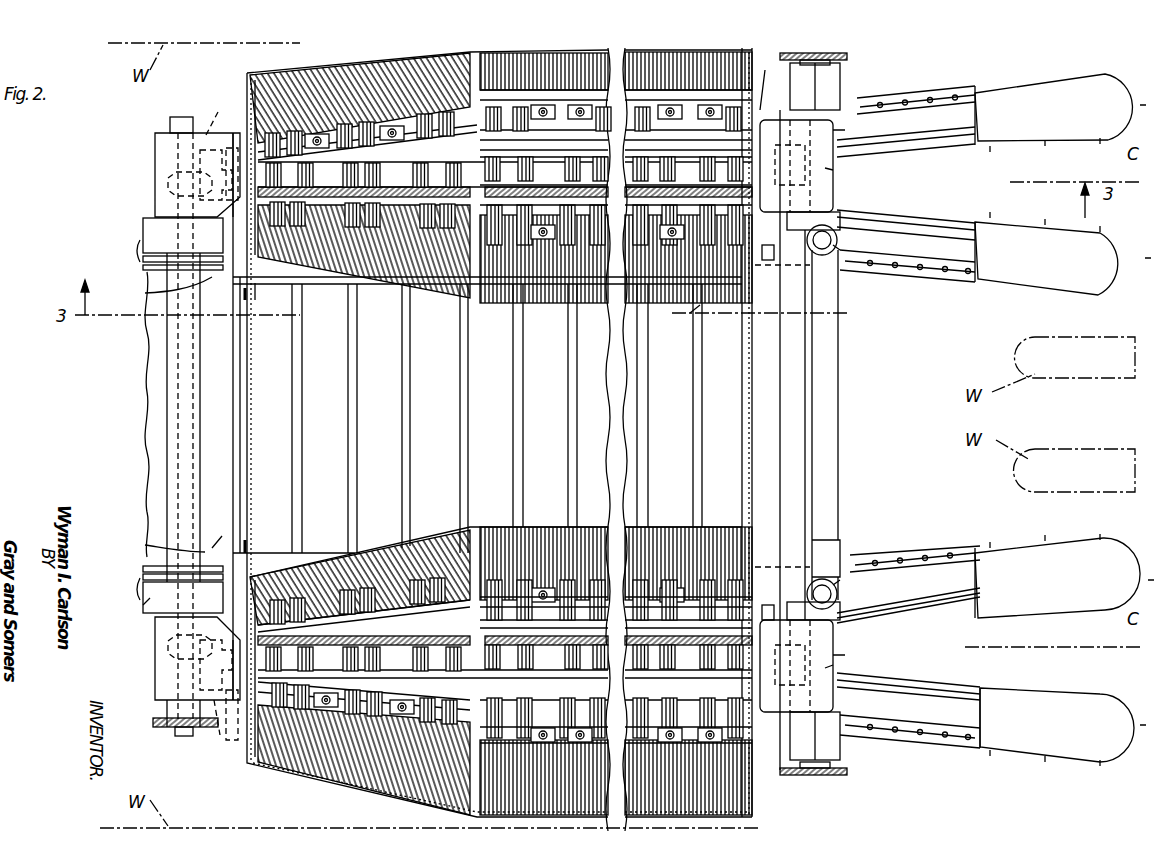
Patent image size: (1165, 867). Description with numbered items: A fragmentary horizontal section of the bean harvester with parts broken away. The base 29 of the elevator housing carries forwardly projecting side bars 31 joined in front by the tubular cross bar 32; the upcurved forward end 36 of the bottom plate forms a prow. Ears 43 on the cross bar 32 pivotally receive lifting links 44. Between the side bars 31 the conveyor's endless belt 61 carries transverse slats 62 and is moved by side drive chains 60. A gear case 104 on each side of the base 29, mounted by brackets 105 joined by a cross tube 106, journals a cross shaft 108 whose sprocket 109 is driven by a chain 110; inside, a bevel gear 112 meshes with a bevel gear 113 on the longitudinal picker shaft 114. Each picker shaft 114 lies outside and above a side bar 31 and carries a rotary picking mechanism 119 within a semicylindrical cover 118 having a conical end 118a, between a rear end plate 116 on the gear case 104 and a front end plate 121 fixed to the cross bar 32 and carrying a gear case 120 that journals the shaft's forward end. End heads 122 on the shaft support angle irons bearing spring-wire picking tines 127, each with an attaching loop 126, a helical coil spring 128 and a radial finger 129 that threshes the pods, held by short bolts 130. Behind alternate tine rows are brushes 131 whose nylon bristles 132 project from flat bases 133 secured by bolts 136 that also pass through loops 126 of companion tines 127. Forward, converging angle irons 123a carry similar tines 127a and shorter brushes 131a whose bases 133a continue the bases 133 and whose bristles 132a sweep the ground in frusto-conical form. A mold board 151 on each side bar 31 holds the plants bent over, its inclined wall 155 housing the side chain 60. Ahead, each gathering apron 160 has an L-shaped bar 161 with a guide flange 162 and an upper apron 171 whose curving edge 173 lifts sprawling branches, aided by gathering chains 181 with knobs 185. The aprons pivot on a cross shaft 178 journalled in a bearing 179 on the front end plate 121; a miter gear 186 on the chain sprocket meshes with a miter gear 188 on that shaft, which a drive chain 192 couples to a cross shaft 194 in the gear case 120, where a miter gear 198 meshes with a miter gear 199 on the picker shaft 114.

The base 29 is at (145, 608).
The channels 31 is at (140, 250).
The bar 32 is at (757, 390).
The extreme forward end 36 is at (822, 451).
The upstanding ears 43 is at (768, 248).
The lifting link 44 is at (790, 215).
The drive chains 60 is at (143, 269).
The endless belt 61 is at (153, 361).
The transverse slats 62 is at (518, 424).
The gear case 104 is at (160, 153).
The brackets 105 is at (150, 227).
The cross tube 106 is at (166, 446).
The cross shaft 108 is at (182, 117).
The sprocket 109 is at (178, 740).
The chain 110 is at (160, 730).
The bevel gear 112 is at (168, 186).
The bevel gear 113 is at (221, 420).
The picker shaft 114 is at (526, 426).
The rear end plate 116 is at (244, 292).
The semicylindrical cover 118 is at (730, 815).
The conical end 118a is at (258, 78).
The rotary picking mechanism 119 is at (537, 306).
The gear case 120 is at (850, 415).
The front end plate 121 is at (700, 306).
The end head 122 is at (250, 89).
The converging angle irons 123a is at (505, 417).
The attaching loop 126 is at (640, 186).
The picking tines 127 is at (342, 176).
The picking tines 127a is at (320, 682).
The helical coil spring 128 is at (618, 140).
The radially projecting finger 129 is at (415, 118).
The short bolts 130 is at (590, 160).
The brushes 131 is at (662, 304).
The brushes 131a is at (432, 304).
The bristles 132 is at (590, 306).
The bristles 132a is at (384, 308).
The flat base 133 is at (634, 90).
The bases 133a is at (470, 118).
The bolts 136 is at (616, 415).
The mold board 151 is at (255, 285).
The inclined wall 155 is at (161, 414).
The gathering aprons 160 is at (1055, 78).
The bar 161 is at (955, 272).
The upstanding guide flange 162 is at (963, 87).
The upper apron 171 is at (1103, 92).
The upper outwardly curving edge 173 is at (1093, 415).
The cross shaft 178 is at (833, 72).
The bearing 179 is at (830, 225).
The chains 181 is at (945, 103).
The knobs 185 is at (935, 220).
The miter gear 186 is at (838, 240).
The miter gear 188 is at (835, 252).
The drive chain 192 is at (822, 60).
The cross shaft 194 is at (816, 88).
The miter gear 198 is at (830, 180).
The miter gear 199 is at (852, 391).